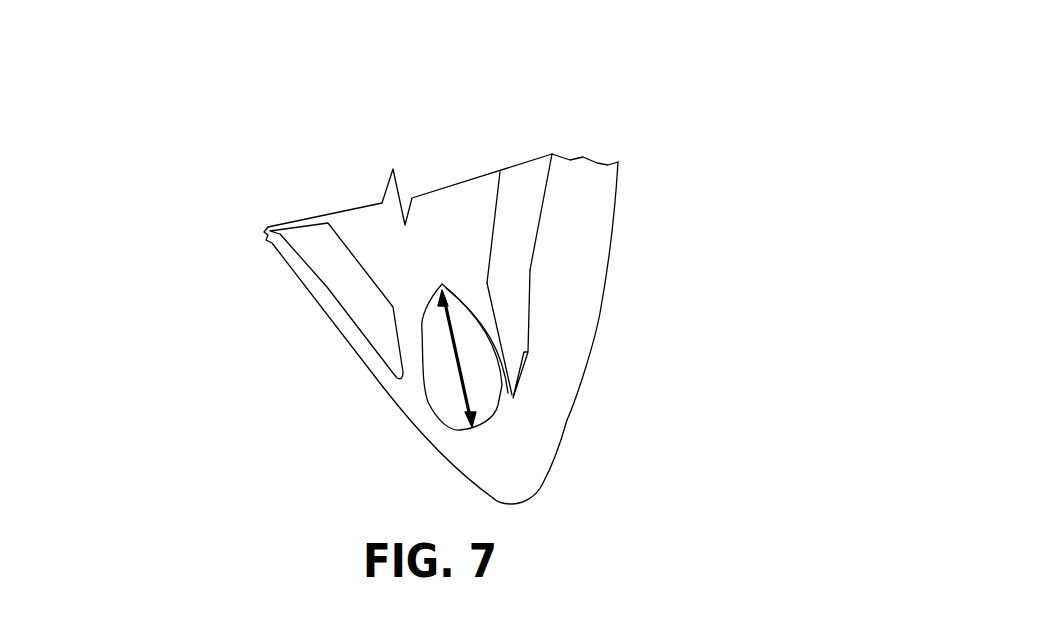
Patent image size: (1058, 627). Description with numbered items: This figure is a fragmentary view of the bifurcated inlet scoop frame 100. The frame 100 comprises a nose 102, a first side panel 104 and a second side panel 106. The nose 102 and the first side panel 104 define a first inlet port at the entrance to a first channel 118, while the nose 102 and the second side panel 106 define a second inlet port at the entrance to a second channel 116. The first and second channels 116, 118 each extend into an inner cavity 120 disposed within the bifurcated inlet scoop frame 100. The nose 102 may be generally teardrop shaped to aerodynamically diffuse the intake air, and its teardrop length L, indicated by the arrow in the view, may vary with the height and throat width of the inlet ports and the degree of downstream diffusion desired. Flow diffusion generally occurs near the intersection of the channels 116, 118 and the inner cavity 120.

The bifurcated inlet scoop frame 100 is at (222, 151).
The nose 102 is at (490, 397).
The first side panel 104 is at (563, 205).
The second side panel 106 is at (387, 385).
The second channel 116 is at (410, 333).
The first channel 118 is at (498, 322).
The inner cavity 120 is at (423, 232).